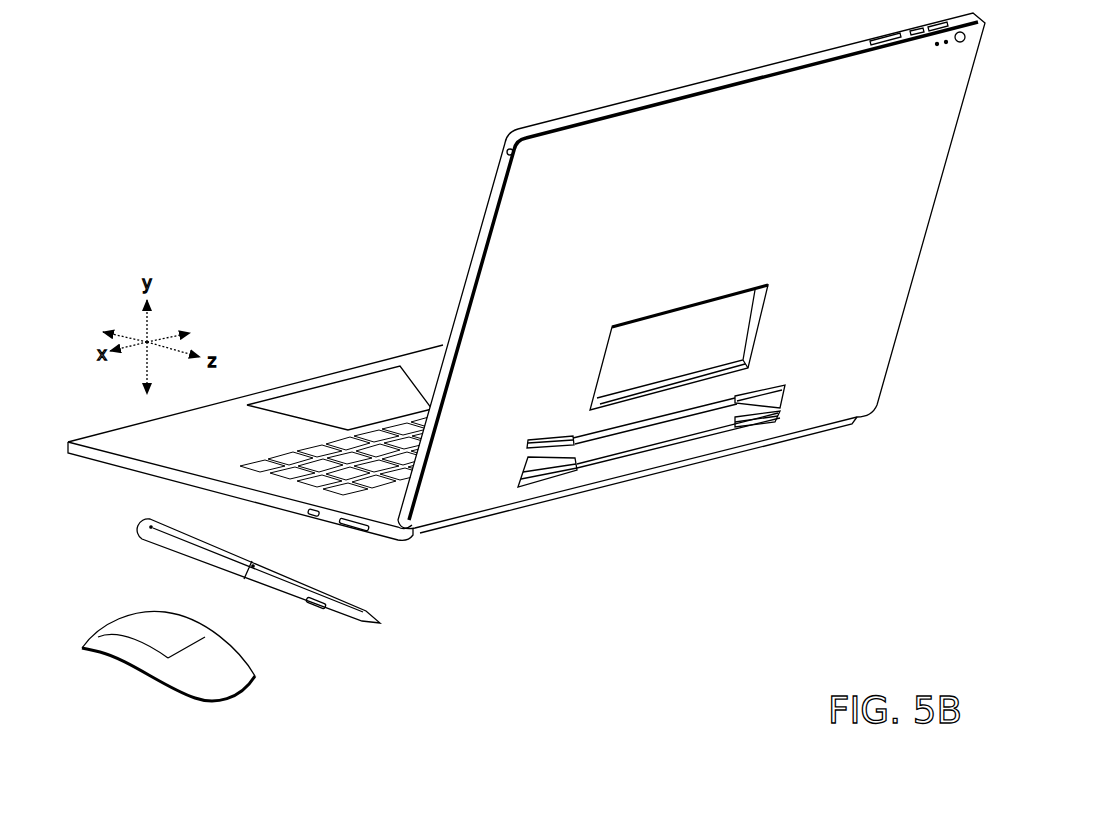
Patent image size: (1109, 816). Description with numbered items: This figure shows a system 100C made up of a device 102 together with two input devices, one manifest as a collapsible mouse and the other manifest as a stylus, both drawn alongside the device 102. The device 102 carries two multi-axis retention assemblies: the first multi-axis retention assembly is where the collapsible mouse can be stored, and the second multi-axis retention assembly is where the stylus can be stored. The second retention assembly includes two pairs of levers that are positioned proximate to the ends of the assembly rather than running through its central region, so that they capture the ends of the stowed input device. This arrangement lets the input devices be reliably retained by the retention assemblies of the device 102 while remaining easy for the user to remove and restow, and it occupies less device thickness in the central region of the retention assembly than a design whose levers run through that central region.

The system 100C is at (415, 92).
The device 102 is at (386, 223).